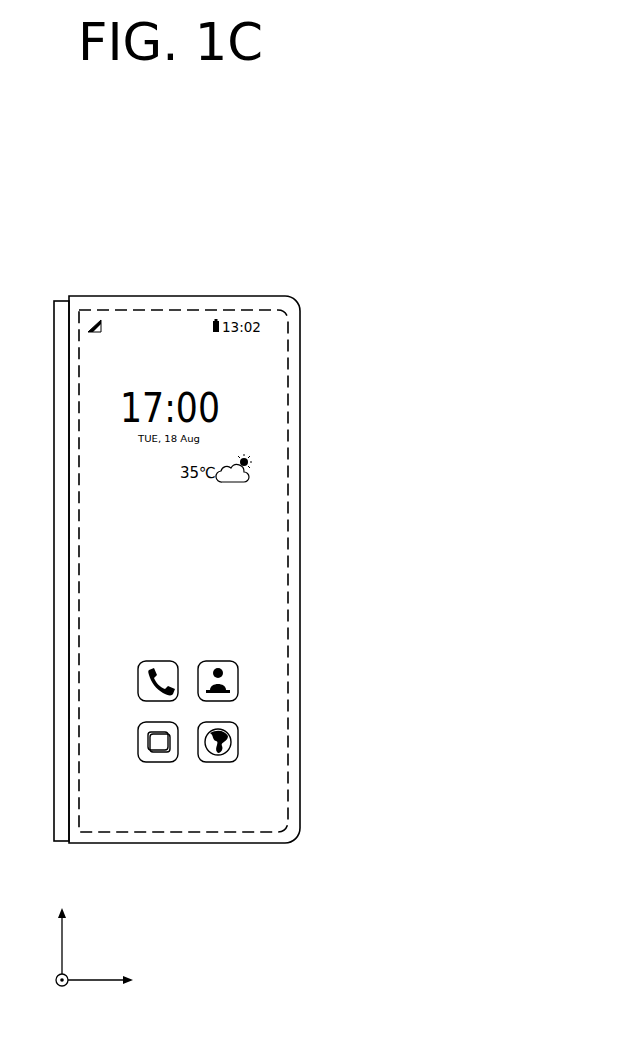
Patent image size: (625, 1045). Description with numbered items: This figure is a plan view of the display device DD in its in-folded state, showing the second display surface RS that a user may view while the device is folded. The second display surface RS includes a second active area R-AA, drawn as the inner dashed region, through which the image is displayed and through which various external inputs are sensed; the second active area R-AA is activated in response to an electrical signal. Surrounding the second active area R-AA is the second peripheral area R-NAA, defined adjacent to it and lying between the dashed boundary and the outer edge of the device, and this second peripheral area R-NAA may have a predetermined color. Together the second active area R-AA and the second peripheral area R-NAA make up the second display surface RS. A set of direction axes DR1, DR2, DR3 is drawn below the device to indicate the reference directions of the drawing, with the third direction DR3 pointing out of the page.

The display device DD is at (300, 237).
The second display surface RS is at (271, 570).
The second active area R-AA is at (273, 331).
The second peripheral area R-NAA is at (295, 364).
The first direction DR1 is at (62, 929).
The second direction DR2 is at (122, 981).
The third direction DR3 is at (62, 995).